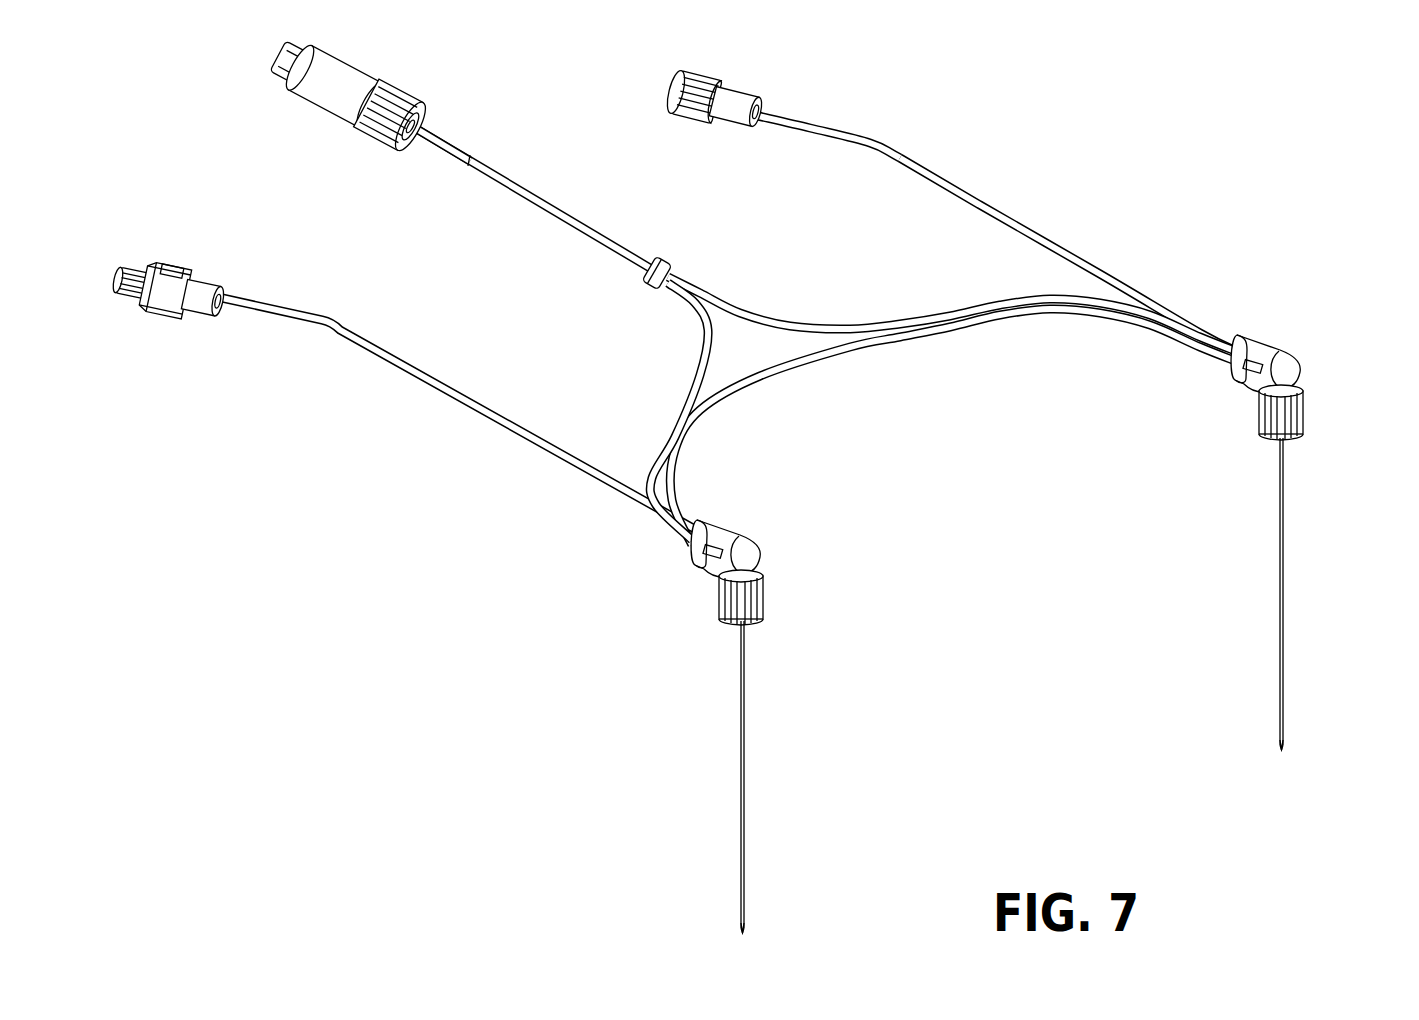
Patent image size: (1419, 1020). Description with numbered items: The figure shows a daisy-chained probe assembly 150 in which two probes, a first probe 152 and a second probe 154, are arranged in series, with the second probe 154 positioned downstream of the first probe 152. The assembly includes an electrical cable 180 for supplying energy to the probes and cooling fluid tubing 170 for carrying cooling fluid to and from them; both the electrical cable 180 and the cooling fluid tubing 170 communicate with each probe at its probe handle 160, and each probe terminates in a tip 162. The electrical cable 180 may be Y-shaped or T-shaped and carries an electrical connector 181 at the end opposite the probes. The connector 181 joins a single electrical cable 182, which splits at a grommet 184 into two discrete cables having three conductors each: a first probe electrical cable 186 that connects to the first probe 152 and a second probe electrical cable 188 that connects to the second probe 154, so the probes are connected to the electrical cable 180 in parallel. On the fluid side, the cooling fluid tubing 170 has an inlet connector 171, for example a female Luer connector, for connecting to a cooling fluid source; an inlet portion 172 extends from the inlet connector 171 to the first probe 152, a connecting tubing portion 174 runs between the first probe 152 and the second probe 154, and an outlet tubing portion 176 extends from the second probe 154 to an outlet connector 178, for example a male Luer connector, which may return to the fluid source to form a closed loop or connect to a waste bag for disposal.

The daisy-chained probe assembly 150 is at (1097, 108).
The first probe 152 is at (1330, 590).
The second probe 154 is at (690, 723).
The probe handle 160 is at (1287, 333).
The needle tip 162 is at (1293, 758).
The cooling fluid tubing 170 is at (1068, 233).
The inlet connector 171 is at (745, 85).
The inlet portion 172 is at (888, 137).
The connecting tubing portion 174 is at (766, 385).
The outlet tubing portion 176 is at (490, 437).
The outlet connector 178 is at (135, 340).
The electrical cable 180 is at (580, 257).
The electrical connector 181 is at (313, 135).
The single electrical cable 182 is at (478, 180).
The grommet 184 is at (673, 258).
The first probe electrical cable 186 is at (855, 320).
The second probe electrical cable 188 is at (675, 362).